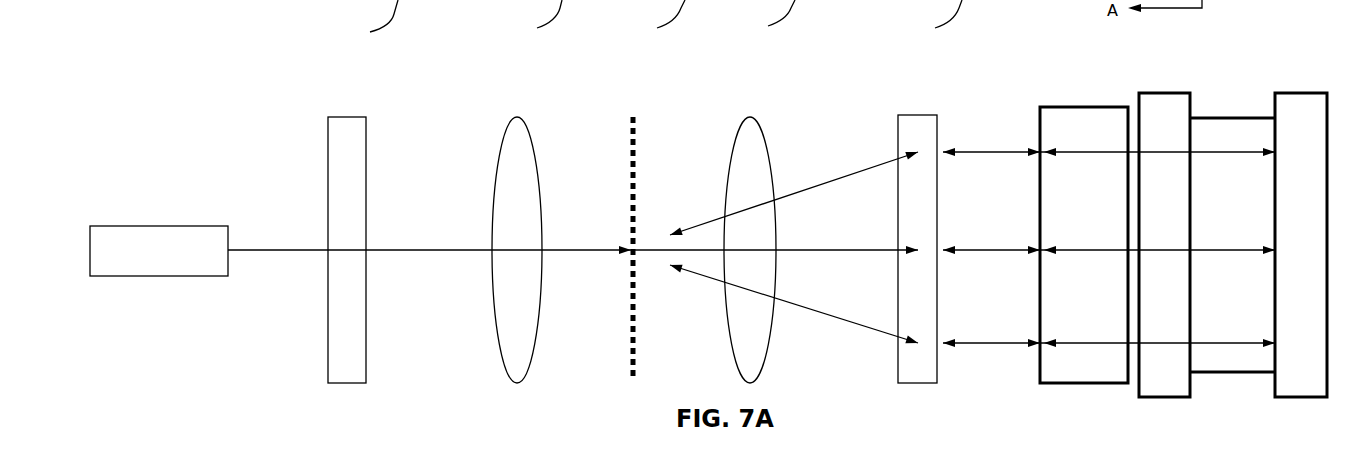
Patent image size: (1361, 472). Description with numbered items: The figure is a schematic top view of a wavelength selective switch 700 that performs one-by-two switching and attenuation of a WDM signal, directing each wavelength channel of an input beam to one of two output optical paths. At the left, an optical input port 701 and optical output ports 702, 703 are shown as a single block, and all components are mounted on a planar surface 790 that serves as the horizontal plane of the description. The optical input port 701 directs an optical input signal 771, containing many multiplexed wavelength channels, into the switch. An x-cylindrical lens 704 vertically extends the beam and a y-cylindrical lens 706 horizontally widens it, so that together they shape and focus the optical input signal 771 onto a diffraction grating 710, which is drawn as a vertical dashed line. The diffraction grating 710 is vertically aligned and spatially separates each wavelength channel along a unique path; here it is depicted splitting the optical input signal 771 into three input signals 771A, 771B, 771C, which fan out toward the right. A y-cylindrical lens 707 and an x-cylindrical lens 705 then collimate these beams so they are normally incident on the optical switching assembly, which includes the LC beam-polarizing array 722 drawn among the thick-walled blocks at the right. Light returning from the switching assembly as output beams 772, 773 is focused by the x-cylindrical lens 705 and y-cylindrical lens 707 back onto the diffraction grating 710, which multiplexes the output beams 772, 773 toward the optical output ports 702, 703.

The wavelength selective switch 700 is at (292, 106).
The optical input port 701 is at (159, 251).
The optical output port 702 is at (159, 251).
The optical output port 703 is at (222, 265).
The planar surface 790 is at (248, 329).
The x-cylindrical lens 704 is at (348, 117).
The y-cylindrical lens 706 is at (517, 117).
The diffraction grating 710 is at (633, 117).
The y-cylindrical lens 707 is at (750, 117).
The x-cylindrical lens 705 is at (912, 115).
The optical input signal 771 is at (523, 203).
The output beam 772 is at (523, 203).
The output beam 773 is at (273, 250).
The input signal 771A is at (857, 172).
The input signal 771B is at (818, 249).
The input signal 771C is at (848, 322).
The LC beam-polarizing array 722 is at (1180, 217).